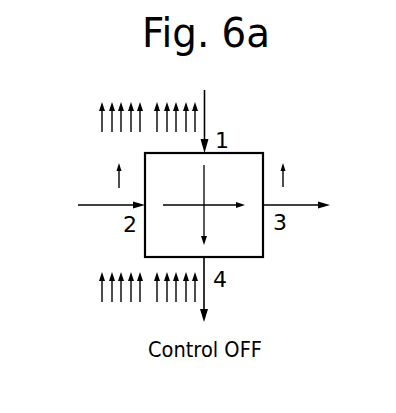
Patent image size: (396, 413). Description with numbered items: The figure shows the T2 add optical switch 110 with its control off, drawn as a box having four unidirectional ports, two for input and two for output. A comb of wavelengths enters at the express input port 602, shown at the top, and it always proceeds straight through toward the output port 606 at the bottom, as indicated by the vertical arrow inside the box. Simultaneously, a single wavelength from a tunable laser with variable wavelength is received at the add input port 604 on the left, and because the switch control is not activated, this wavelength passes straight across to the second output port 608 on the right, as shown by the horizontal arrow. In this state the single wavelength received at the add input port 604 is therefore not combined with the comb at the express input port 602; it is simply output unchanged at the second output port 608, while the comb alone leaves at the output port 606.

The add optical switch 110 is at (263, 255).
The express input port 602 is at (205, 99).
The add input port 604 is at (96, 207).
The output port 606 is at (205, 297).
The second output port 608 is at (303, 203).